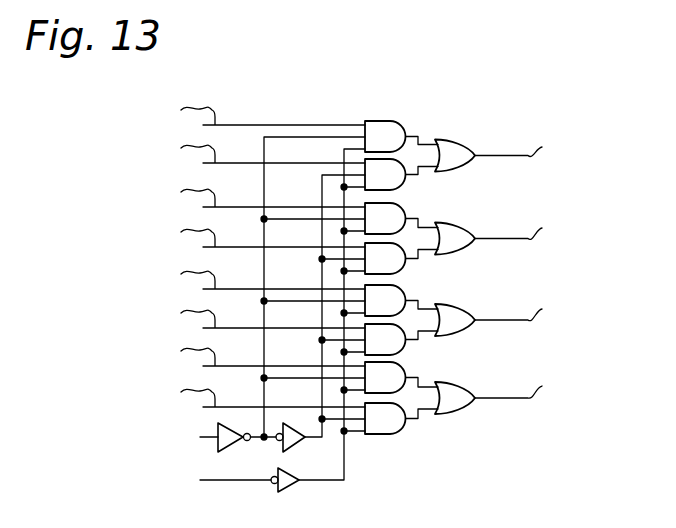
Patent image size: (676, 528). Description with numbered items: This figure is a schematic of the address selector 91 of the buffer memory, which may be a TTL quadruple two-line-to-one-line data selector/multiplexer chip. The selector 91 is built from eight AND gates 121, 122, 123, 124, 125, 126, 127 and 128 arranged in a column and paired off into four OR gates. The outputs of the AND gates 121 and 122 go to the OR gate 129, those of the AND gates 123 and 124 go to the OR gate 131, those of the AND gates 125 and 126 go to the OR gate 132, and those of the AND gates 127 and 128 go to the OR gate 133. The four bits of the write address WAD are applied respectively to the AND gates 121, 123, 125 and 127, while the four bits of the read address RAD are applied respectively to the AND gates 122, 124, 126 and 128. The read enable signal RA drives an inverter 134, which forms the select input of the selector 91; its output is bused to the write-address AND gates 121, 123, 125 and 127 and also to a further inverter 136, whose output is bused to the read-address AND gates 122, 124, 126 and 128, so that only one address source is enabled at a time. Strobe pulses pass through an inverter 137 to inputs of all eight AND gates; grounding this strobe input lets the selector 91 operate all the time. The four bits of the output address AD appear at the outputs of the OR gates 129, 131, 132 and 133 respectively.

The address selector 91 is at (540, 110).
The AND gate 121 is at (400, 120).
The AND gate 122 is at (408, 186).
The AND gate 123 is at (404, 205).
The AND gate 124 is at (408, 266).
The AND gate 125 is at (404, 287).
The AND gate 126 is at (408, 346).
The AND gate 127 is at (404, 366).
The AND gate 128 is at (407, 429).
The OR gate 129 is at (471, 139).
The OR gate 131 is at (480, 223).
The OR gate 132 is at (480, 305).
The OR gate 133 is at (479, 384).
The inverter 134 is at (233, 454).
The inverter 136 is at (302, 453).
The inverter 137 is at (283, 493).